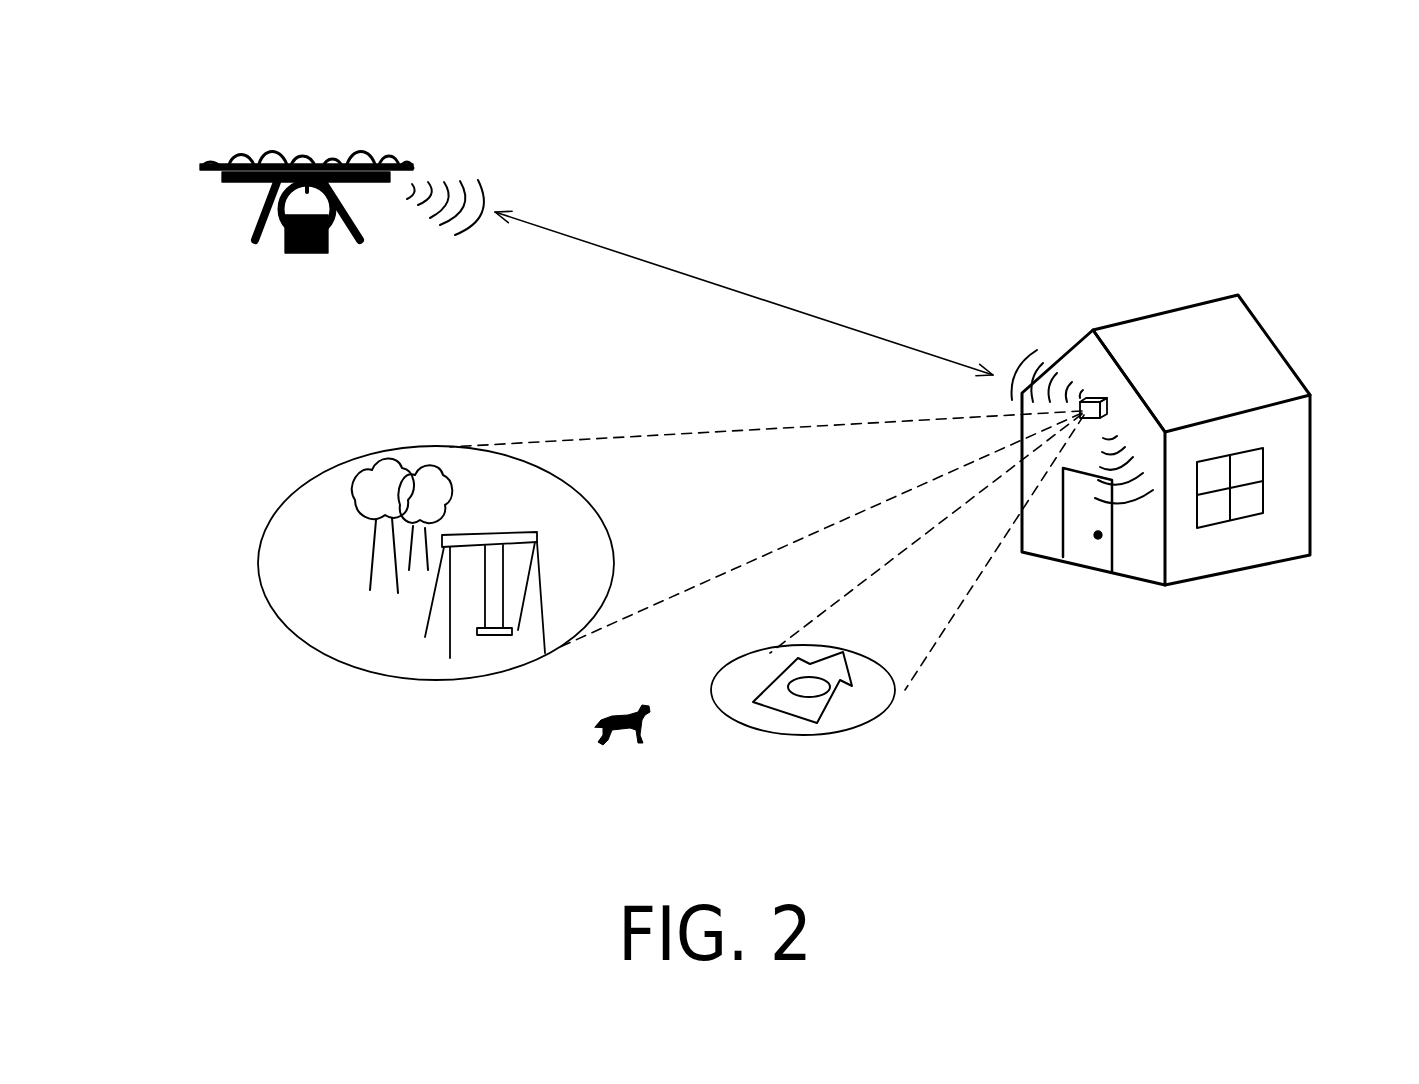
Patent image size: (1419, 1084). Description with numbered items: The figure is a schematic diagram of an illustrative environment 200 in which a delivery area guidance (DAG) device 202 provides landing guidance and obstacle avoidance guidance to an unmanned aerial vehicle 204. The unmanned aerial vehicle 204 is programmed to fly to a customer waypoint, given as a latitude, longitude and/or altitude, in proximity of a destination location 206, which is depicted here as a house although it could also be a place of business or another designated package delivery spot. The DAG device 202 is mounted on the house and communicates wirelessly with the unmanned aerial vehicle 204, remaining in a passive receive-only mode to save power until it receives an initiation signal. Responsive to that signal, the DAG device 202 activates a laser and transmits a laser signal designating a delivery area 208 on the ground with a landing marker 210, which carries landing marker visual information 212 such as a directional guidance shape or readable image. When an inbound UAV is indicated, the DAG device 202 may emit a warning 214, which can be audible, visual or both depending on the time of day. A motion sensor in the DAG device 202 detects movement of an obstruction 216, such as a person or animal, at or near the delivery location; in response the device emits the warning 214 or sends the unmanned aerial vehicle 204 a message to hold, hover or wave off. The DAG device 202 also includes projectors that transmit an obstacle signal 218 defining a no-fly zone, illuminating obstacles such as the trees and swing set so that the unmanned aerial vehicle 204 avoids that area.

The environment 200 is at (1312, 88).
The delivery area guidance device 202 is at (1103, 398).
The unmanned aerial vehicle 204 is at (228, 160).
The destination location 206 is at (1168, 310).
The delivery area 208 is at (893, 702).
The landing marker 210 is at (800, 697).
The landing marker visual information 212 is at (818, 722).
The warning 214 is at (1137, 503).
The obstruction 216 is at (620, 730).
The obstacle signal 218 is at (437, 447).